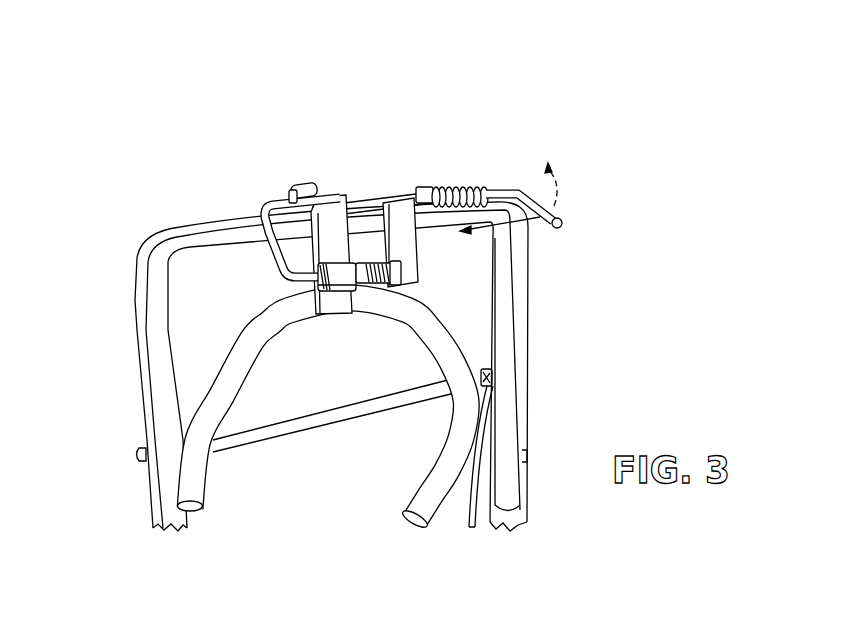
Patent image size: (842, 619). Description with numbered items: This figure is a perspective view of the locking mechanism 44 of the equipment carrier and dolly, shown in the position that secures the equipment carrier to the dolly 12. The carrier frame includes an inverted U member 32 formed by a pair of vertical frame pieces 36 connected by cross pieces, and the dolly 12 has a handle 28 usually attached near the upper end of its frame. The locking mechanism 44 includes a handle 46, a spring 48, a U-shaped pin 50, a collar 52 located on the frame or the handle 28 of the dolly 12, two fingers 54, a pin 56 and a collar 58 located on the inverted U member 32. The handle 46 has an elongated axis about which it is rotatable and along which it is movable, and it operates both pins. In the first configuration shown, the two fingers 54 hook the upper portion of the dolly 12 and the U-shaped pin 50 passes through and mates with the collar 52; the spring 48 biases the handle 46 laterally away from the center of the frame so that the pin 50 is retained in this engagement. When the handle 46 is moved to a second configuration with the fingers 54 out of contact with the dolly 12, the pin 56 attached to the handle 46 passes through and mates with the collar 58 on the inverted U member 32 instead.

The dolly 12 is at (508, 420).
The handle 28 is at (457, 360).
The inverted U member 32 is at (163, 378).
The vertical frame pieces 36 is at (150, 478).
The locking mechanism 44 is at (320, 159).
The handle 46 is at (527, 195).
The spring 48 is at (463, 182).
The U-shaped pin 50 is at (287, 262).
The collar 52 is at (372, 263).
The fingers 54 is at (325, 235).
The pin 56 is at (268, 211).
The collar 58 is at (297, 191).